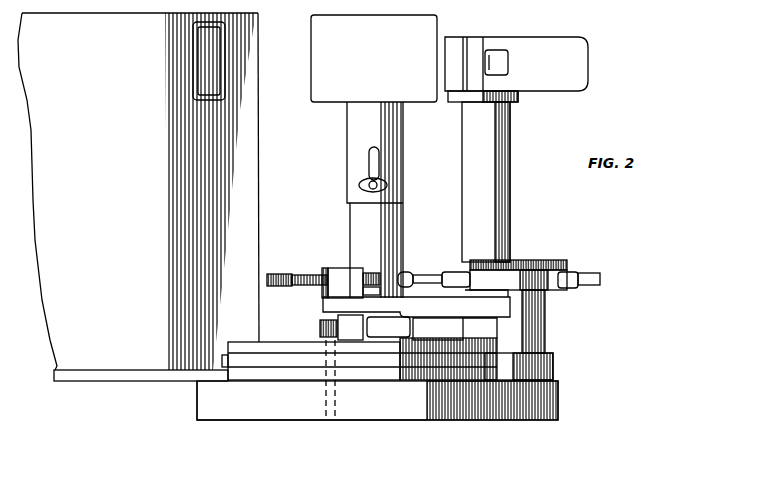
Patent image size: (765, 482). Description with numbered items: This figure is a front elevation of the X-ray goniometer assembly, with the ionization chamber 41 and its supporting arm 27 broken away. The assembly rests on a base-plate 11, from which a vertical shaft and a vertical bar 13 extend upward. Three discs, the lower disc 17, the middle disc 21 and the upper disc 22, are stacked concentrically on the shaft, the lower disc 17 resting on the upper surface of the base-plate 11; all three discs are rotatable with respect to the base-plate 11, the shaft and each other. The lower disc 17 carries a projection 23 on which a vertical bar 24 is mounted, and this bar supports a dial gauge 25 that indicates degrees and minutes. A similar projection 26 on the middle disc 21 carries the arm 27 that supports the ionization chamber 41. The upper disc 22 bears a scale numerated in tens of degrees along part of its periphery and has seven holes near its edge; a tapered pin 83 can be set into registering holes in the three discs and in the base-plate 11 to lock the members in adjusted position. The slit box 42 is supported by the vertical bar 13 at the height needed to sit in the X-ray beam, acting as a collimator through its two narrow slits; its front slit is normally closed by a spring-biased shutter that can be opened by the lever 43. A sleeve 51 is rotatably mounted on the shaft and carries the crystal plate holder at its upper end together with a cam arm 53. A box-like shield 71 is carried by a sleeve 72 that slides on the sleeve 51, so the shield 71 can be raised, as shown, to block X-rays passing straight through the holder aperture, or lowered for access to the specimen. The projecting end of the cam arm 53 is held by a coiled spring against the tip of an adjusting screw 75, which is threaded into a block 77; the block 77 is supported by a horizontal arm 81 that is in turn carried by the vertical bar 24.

The base-plate 11 is at (495, 418).
The vertical bar 13 is at (502, 192).
The lower disc 17 is at (238, 377).
The middle disc 21 is at (277, 360).
The upper disc 22 is at (283, 345).
The projection 23 is at (553, 366).
The vertical bar 24 is at (540, 322).
The dial gauge 25 is at (569, 250).
The projection 26 is at (222, 360).
The arm 27 is at (173, 372).
The ionization chamber 41 is at (252, 193).
The slit box 42 is at (580, 66).
The lever 43 is at (510, 55).
The sleeve 51 is at (400, 228).
The cam arm 53 is at (400, 270).
The box-like shield 71 is at (325, 61).
The sleeve 72 is at (355, 128).
The adjusting screw 75 is at (286, 275).
The block 77 is at (338, 256).
The horizontal arm 81 is at (340, 305).
The tapered pin 83 is at (320, 328).